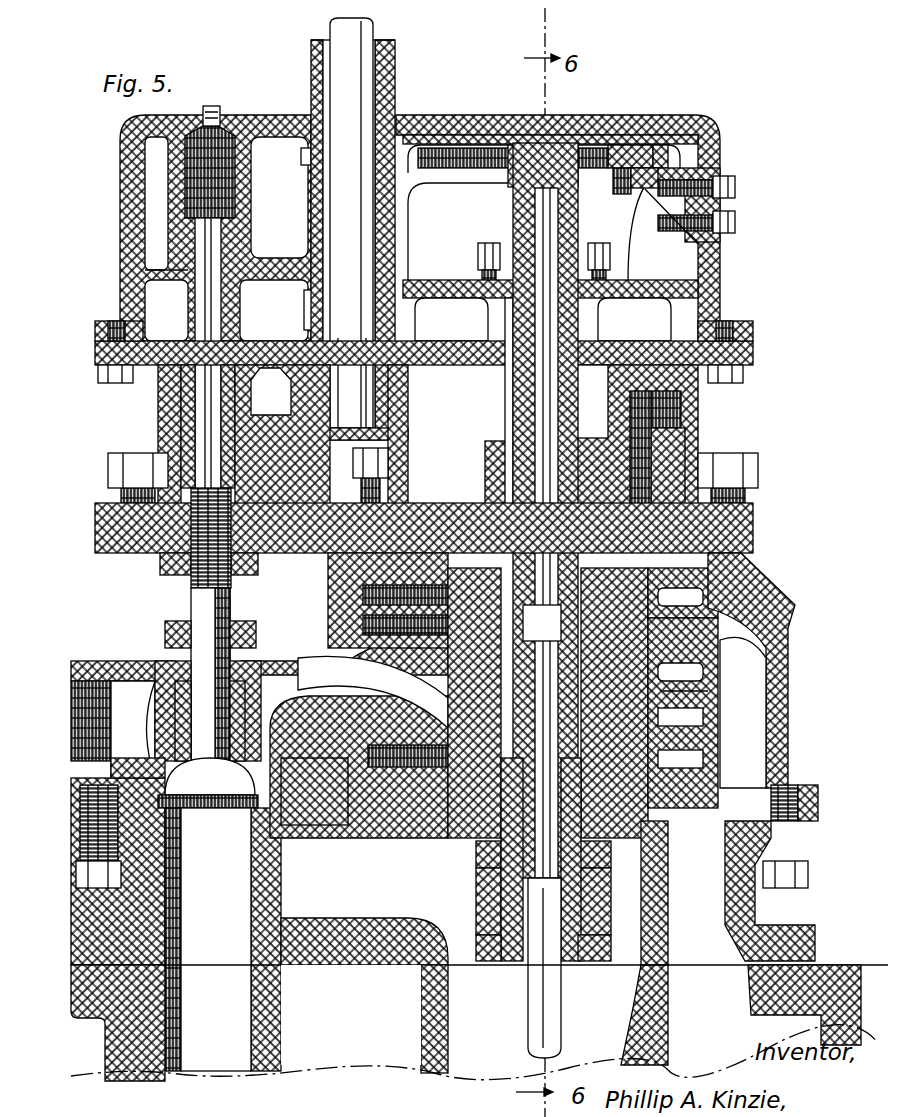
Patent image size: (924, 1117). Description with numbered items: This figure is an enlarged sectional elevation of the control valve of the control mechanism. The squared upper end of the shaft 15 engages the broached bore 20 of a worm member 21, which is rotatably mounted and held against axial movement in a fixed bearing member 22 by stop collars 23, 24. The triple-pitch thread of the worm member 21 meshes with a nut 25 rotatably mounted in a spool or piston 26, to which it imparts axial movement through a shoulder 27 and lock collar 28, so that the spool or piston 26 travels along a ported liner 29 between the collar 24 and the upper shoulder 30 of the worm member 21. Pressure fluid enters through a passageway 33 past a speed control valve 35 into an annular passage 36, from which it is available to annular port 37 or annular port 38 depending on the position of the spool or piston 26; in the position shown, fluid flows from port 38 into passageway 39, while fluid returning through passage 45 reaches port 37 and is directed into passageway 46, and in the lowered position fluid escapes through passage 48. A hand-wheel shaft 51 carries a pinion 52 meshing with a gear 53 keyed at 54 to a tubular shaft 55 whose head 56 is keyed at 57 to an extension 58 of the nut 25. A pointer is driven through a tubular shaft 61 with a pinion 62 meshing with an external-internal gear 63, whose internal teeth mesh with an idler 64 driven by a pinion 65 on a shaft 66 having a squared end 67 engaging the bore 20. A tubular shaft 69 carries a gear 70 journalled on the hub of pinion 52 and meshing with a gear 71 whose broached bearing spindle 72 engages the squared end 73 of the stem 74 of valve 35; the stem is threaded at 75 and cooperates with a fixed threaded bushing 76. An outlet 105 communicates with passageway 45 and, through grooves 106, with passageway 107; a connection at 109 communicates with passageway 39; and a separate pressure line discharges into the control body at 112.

The shaft 15 is at (522, 1023).
The broached bore 20 is at (525, 858).
The worm member 21 is at (487, 812).
The fixed bearing member 22 is at (413, 962).
The stop collar 23 is at (487, 953).
The stop collar 24 is at (622, 838).
The nut 25 is at (400, 790).
The spool or piston 26 is at (445, 712).
The shoulder 27 is at (465, 682).
The lock collar 28 is at (690, 800).
The ported liner 29 is at (700, 683).
The upper shoulder 30 is at (470, 664).
The passageway 33 is at (143, 1023).
The speed control valve 35 is at (205, 775).
The annular passage 36 is at (632, 664).
The annular port 37 is at (355, 622).
The annular port 38 is at (680, 712).
The passageway 39 is at (468, 1062).
The passage 45 is at (670, 1015).
The passageway 46 is at (355, 570).
The passage 48 is at (680, 752).
The shaft 51 is at (330, 72).
The pinion 52 is at (298, 298).
The gear 53 is at (420, 350).
The key 54 is at (494, 340).
The tubular shaft 55 is at (515, 410).
The head 56 is at (648, 588).
The key 57 is at (357, 597).
The extension 58 is at (695, 636).
The tubular shaft 61 is at (388, 70).
The pinion 62 is at (297, 150).
The external-internal gear 63 is at (452, 127).
The idler 64 is at (640, 147).
The pinion 65 is at (510, 157).
The shaft 66 is at (543, 193).
The squared end 67 is at (380, 745).
The tubular shaft 69 is at (388, 32).
The gear 70 is at (295, 240).
The gear 71 is at (137, 262).
The broached bearing spindle 72 is at (195, 300).
The squared end 73 is at (227, 463).
The stem 74 is at (212, 597).
The thread 75 is at (155, 570).
The threaded bushing 76 is at (172, 585).
The outlet 105 is at (762, 580).
The grooves 106 is at (330, 940).
The passageway 107 is at (351, 1015).
The control body connection 109 is at (670, 397).
The discharge point 112 is at (68, 700).